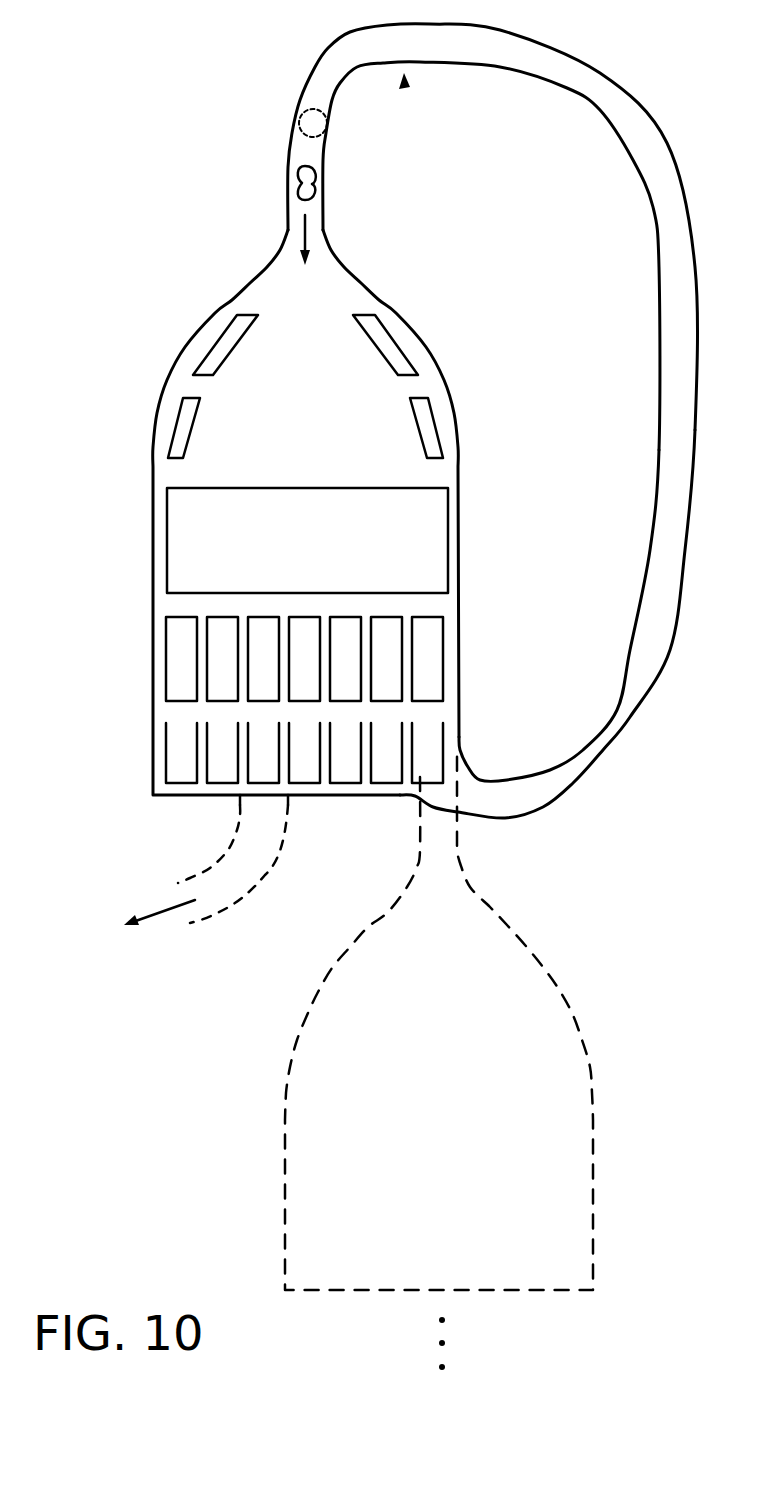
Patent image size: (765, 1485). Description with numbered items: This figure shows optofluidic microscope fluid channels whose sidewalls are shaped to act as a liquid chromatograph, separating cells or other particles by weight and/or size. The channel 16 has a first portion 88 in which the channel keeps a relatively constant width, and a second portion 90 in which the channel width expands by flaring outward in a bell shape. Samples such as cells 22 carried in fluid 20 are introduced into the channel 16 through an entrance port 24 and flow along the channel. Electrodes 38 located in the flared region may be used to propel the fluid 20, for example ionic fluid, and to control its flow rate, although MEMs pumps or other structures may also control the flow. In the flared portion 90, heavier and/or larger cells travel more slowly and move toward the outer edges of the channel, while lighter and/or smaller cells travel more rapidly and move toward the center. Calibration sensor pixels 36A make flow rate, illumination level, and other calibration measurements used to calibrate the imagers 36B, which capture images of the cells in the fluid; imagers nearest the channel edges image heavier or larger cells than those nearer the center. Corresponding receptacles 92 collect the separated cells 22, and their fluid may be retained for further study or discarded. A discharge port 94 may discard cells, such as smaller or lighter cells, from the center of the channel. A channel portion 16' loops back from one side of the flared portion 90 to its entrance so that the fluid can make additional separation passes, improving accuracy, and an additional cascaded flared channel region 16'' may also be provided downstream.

The channel 16 is at (398, 256).
The channel portion 16' is at (551, 624).
The channel region 16'' is at (409, 1060).
The fluid 20 is at (303, 229).
The cells 22 is at (298, 177).
The entrance port 24 is at (306, 115).
The calibration sensor pixels 36A is at (180, 542).
The imagers 36B is at (217, 622).
The electrodes 38 is at (228, 333).
The first portion 88 is at (405, 82).
The second portion 90 is at (447, 359).
The receptacles 92 is at (223, 753).
The discharge port 94 is at (237, 906).